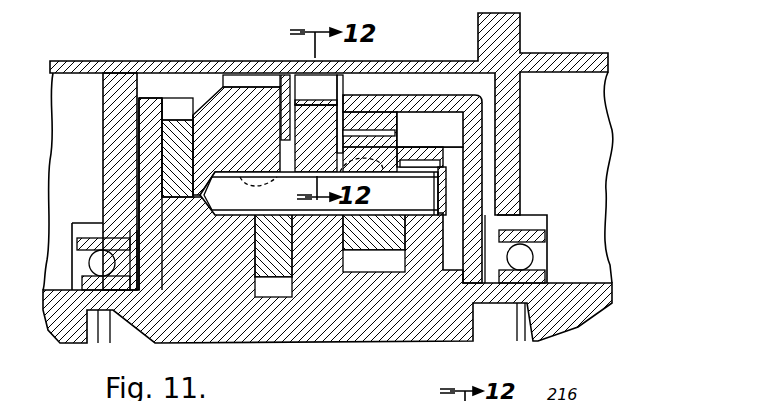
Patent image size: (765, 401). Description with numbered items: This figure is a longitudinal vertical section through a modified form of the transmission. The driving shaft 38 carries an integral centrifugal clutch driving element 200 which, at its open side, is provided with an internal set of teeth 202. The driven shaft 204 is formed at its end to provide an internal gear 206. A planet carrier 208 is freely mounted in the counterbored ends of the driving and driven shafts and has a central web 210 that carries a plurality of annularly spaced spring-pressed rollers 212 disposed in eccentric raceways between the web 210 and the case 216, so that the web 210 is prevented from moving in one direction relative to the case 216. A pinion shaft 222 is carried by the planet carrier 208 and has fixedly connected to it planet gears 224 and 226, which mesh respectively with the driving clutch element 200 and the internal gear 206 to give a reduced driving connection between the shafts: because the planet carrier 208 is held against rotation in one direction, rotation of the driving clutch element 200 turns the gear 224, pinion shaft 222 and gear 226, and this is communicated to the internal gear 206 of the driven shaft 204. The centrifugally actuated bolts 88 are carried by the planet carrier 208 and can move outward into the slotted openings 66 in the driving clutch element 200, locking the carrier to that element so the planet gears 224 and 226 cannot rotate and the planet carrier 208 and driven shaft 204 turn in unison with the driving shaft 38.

The driving shaft 38 is at (55, 333).
The slotted openings 66 is at (163, 103).
The centrifugally actuated bolts 88 is at (167, 163).
The centrifugal clutch driving element 200 is at (213, 100).
The internal set of teeth 202 is at (260, 107).
The driven shaft 204 is at (600, 293).
The internal gear 206 is at (393, 124).
The planet carrier 208 is at (385, 340).
The central web 210 is at (355, 117).
The spring-pressed rollers 212 is at (345, 68).
The case 216 is at (418, 62).
The pinion shaft 222 is at (430, 183).
The planet gear 224 is at (273, 157).
The planet gear 226 is at (380, 158).